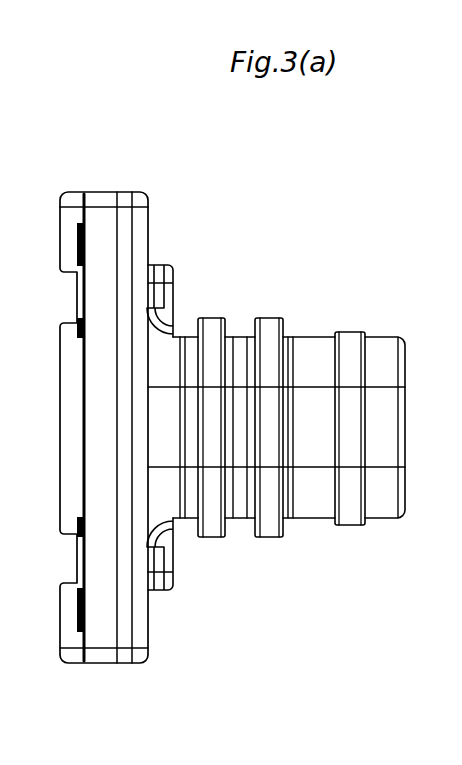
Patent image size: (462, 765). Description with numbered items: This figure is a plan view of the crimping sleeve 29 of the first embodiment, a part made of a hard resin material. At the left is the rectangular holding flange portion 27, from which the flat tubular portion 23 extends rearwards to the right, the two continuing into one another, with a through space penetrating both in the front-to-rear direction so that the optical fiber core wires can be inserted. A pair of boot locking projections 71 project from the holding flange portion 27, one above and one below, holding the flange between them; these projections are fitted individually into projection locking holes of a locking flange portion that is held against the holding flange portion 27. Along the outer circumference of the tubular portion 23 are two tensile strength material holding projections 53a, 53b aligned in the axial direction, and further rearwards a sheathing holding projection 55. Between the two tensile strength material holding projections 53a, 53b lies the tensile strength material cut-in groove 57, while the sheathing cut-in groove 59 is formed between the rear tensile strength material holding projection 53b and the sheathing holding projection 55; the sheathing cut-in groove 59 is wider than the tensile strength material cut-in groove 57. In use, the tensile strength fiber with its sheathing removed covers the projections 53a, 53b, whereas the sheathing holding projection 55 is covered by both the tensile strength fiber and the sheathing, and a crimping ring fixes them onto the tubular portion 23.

The crimping sleeve 29 is at (80, 173).
The holding flange portion 27 is at (103, 662).
The boot locking projections 71 is at (174, 282).
The tubular portion 23 is at (383, 520).
The tensile strength material holding projection 53a is at (214, 318).
The tensile strength material holding projection 53b is at (273, 318).
The sheathing holding projection 55 is at (348, 332).
The tensile strength material cut-in groove 57 is at (240, 522).
The sheathing cut-in groove 59 is at (310, 522).